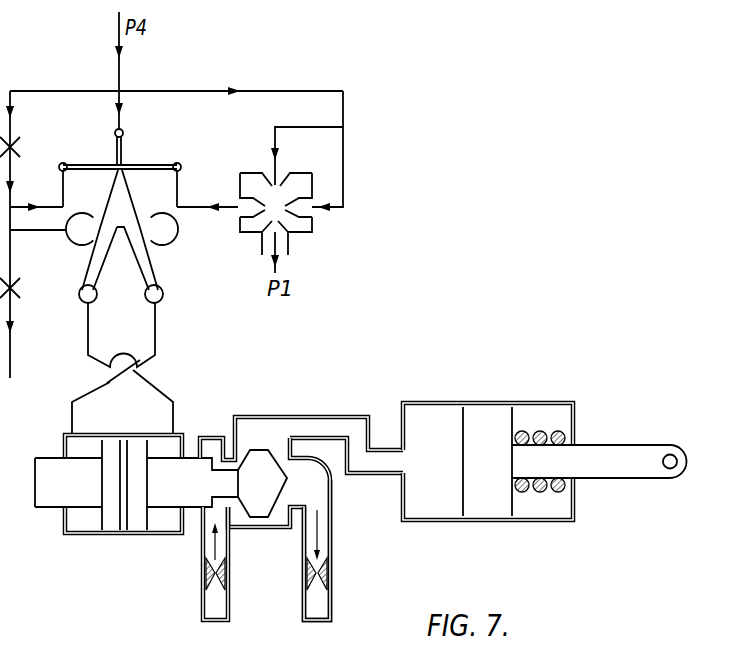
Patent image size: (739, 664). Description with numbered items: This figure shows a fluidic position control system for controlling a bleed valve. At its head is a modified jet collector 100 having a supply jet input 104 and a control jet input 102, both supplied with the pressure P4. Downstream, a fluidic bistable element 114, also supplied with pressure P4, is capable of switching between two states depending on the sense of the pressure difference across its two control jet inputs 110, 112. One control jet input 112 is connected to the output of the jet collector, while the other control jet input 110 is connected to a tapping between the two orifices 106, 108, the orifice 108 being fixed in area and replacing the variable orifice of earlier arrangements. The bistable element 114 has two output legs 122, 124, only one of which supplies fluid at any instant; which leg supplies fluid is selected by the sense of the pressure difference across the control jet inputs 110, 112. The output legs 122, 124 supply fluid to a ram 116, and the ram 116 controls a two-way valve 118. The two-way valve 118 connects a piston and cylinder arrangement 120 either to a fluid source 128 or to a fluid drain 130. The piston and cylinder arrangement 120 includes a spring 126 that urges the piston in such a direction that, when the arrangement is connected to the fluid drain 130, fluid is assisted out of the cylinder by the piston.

The jet collector 100 is at (357, 196).
The control jet input 102 is at (272, 137).
The supply jet input 104 is at (336, 208).
The orifice 106 is at (17, 147).
The orifice 108 is at (14, 288).
The control jet input 110 is at (62, 163).
The control jet input 112 is at (177, 163).
The fluidic bistable element 114 is at (184, 237).
The ram 116 is at (76, 536).
The two-way valve 118 is at (255, 408).
The piston and cylinder arrangement 120 is at (500, 401).
The output leg 122 is at (89, 273).
The output leg 124 is at (137, 270).
The spring 126 is at (548, 493).
The fluid source 128 is at (204, 572).
The fluid drain 130 is at (331, 575).